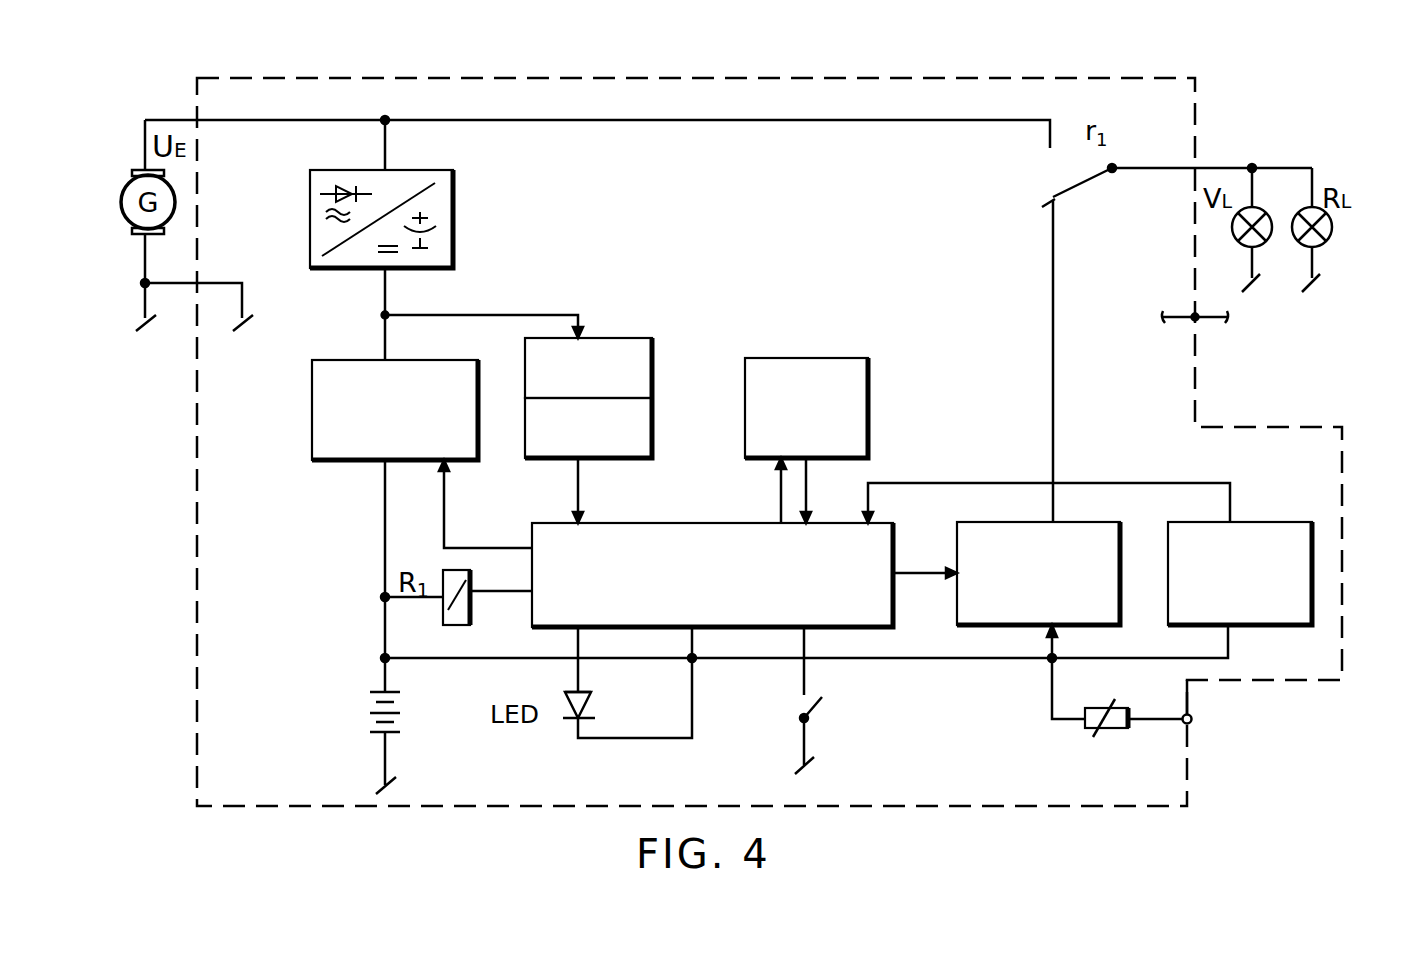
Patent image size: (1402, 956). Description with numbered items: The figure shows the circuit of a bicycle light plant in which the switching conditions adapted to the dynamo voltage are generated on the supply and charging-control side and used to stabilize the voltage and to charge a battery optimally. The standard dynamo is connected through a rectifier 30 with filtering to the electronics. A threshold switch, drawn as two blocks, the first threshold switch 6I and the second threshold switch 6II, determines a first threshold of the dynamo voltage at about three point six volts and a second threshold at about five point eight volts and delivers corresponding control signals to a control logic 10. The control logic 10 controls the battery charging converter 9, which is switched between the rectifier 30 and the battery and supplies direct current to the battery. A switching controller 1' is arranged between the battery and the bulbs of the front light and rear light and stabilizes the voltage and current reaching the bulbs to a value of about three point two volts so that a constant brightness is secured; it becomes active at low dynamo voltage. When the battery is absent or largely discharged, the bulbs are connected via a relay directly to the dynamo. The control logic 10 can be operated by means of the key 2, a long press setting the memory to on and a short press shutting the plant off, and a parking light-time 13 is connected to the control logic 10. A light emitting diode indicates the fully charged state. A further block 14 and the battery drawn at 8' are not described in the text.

The rectifier 30 is at (453, 222).
The battery charging converter 9 is at (352, 358).
The first threshold switch 6I is at (613, 337).
The second threshold switch 6II is at (652, 445).
The parking light-time 13 is at (803, 356).
The control logic 10 is at (697, 503).
The switching controller 1' is at (1038, 558).
The auxiliary circuit 14 is at (1260, 538).
The battery 8' is at (366, 743).
The key 2 is at (832, 708).